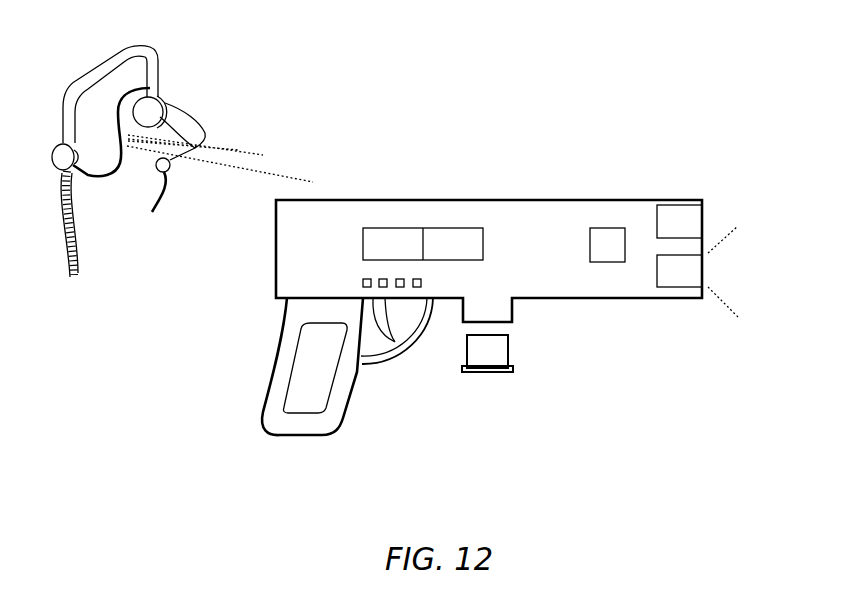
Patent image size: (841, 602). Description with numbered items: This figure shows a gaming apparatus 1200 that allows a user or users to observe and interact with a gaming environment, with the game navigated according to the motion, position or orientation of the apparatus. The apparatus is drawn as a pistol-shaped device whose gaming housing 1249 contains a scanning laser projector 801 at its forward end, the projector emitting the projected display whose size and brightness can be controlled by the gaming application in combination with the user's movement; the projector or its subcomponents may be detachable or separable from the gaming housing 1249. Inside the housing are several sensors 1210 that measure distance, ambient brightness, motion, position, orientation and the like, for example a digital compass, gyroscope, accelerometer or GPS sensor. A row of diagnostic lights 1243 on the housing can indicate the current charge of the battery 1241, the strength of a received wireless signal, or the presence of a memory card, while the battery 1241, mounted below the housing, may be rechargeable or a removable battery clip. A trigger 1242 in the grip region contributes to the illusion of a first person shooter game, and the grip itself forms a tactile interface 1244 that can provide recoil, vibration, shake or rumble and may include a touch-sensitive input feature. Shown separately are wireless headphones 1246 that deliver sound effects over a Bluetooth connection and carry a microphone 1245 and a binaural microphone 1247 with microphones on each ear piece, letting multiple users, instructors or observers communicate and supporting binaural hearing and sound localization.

The gaming apparatus 1200 is at (487, 92).
The sensors 1210 is at (392, 238).
The gaming housing 1249 is at (510, 198).
The scanning laser projector 801 is at (675, 277).
The diagnostic lights 1243 is at (363, 283).
The tactile interface 1244 is at (302, 347).
The trigger 1242 is at (410, 352).
The battery 1241 is at (495, 377).
The wireless headphones 1246 is at (120, 55).
The binaural microphone 1247 is at (150, 110).
The microphone 1245 is at (165, 196).